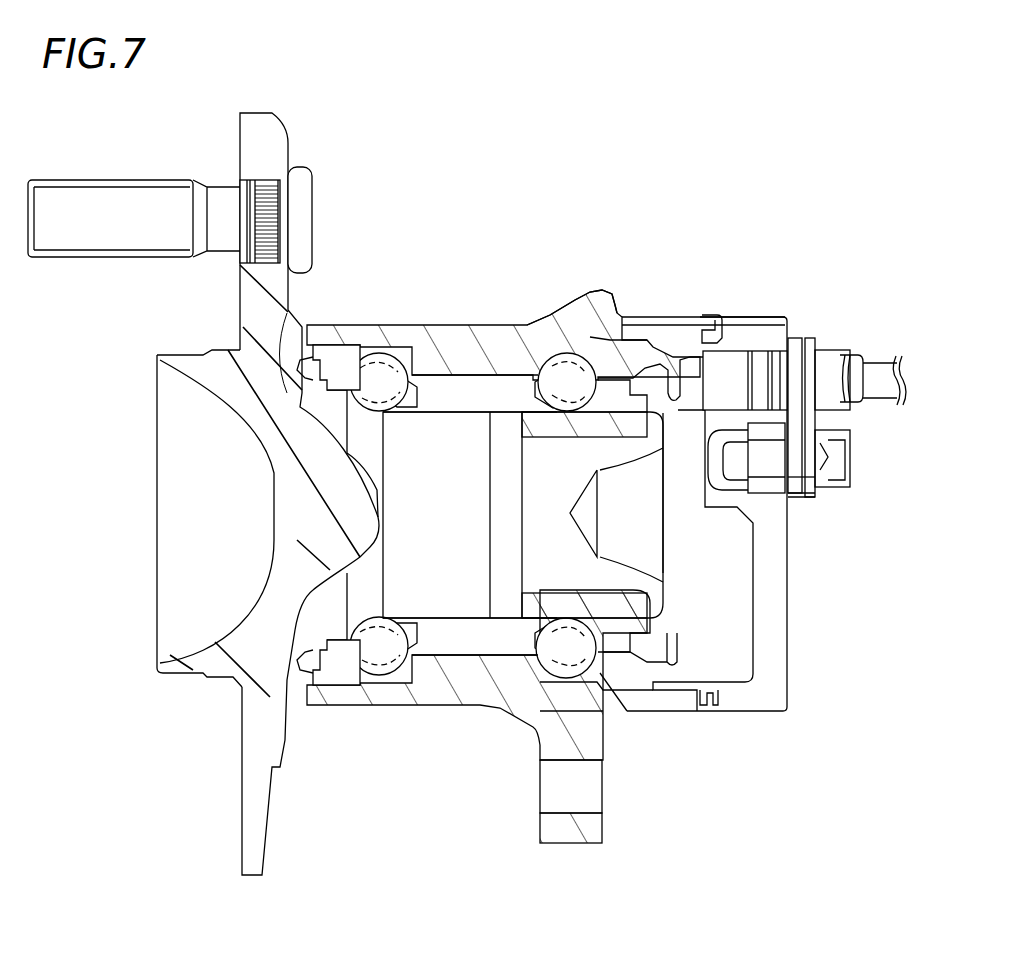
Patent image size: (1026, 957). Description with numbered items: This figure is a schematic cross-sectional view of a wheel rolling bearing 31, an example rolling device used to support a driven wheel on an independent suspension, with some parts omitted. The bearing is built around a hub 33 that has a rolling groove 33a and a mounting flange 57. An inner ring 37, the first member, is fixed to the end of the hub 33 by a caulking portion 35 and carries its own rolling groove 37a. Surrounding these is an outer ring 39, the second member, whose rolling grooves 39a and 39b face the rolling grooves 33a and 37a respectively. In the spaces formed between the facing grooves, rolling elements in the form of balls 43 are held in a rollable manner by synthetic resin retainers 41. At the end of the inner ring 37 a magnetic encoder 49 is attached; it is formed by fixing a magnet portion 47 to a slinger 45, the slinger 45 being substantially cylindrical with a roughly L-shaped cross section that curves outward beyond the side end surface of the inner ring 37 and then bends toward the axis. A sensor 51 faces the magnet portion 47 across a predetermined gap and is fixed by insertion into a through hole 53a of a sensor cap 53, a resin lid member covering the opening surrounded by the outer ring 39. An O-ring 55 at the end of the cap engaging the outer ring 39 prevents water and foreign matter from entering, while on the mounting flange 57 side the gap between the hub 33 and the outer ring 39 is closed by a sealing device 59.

The wheel rolling bearing 31 is at (526, 196).
The hub 33 is at (228, 494).
The rolling groove 33a is at (345, 397).
The caulking portion 35 is at (625, 612).
The inner ring 37 is at (582, 543).
The rolling groove 37a is at (578, 330).
The outer ring 39 is at (495, 444).
The rolling groove 39a is at (398, 363).
The rolling groove 39b is at (550, 353).
The retainer 41 is at (358, 356).
The rolling element 43 is at (560, 612).
The slinger 45 is at (640, 340).
The magnet portion 47 is at (680, 340).
The magnetic encoder 49 is at (651, 432).
The sensor 51 is at (727, 378).
The sensor cap 53 is at (757, 498).
The through hole 53a is at (788, 337).
The O-ring 55 is at (706, 320).
The mounting flange 57 is at (248, 146).
The sealing device 59 is at (160, 358).